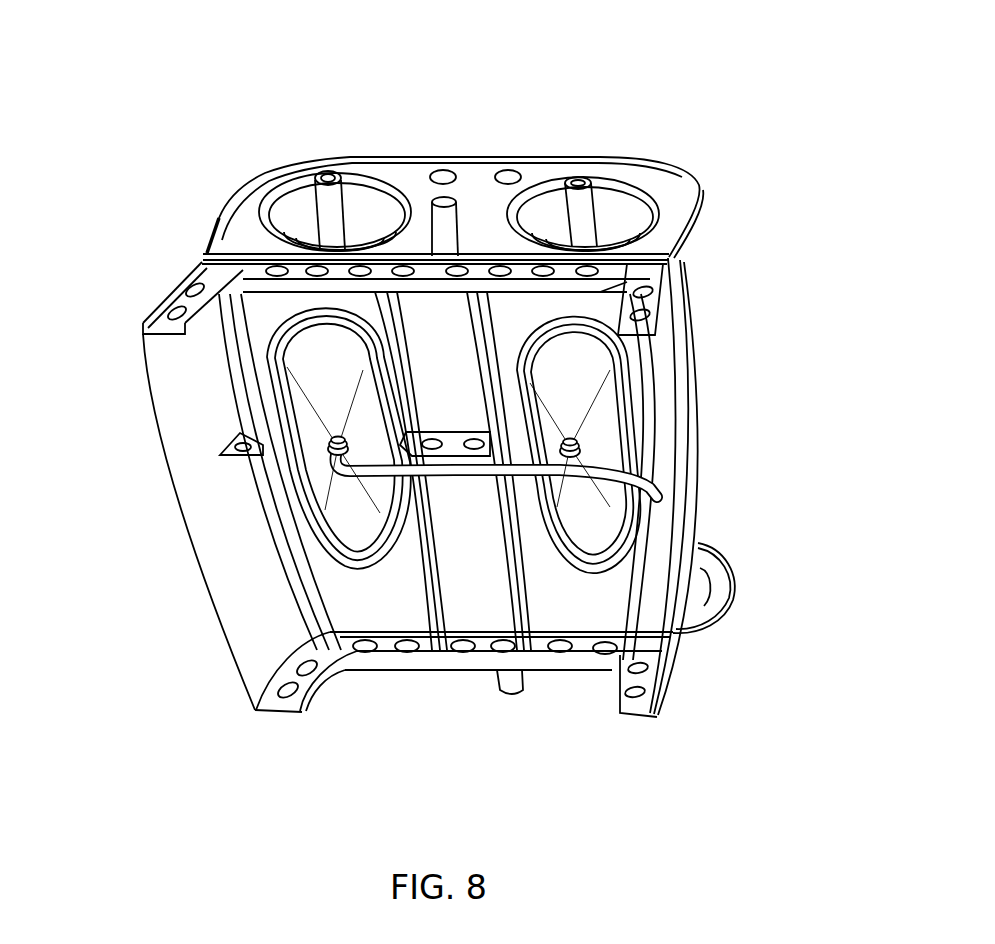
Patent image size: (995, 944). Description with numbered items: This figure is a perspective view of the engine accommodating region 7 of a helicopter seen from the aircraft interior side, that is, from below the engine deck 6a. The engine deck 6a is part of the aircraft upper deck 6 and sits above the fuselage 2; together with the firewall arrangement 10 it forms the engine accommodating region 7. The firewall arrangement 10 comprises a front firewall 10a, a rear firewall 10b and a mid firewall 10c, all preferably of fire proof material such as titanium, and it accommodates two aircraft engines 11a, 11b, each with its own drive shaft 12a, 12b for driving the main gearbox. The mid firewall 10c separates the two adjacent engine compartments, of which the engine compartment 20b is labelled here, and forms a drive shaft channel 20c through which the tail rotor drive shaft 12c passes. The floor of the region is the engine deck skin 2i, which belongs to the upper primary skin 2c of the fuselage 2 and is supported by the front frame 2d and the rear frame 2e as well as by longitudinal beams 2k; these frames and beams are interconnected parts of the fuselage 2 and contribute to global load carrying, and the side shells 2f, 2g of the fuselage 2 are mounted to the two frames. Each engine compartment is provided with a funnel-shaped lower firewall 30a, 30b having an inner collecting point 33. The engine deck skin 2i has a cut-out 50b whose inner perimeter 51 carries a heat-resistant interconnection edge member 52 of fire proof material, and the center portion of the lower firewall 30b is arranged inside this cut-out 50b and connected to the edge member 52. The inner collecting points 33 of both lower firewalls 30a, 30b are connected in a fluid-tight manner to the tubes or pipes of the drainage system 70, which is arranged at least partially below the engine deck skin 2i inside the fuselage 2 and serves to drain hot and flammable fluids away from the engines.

The fuselage 2 is at (243, 640).
The upper primary skin 2c is at (580, 603).
The front frame 2d is at (162, 322).
The rear frame 2e is at (631, 702).
The side shell 2f is at (170, 407).
The side shell 2g is at (668, 337).
The engine deck skin 2i is at (260, 307).
The longitudinal beams 2k is at (427, 650).
The aircraft upper deck 6 is at (690, 650).
The engine deck 6a is at (712, 247).
The engine accommodating region 7 is at (428, 85).
The firewall arrangement 10 is at (243, 205).
The front firewall 10a is at (237, 234).
The rear firewall 10b is at (717, 587).
The mid firewall 10c is at (463, 240).
The aircraft engine 11a is at (357, 205).
The aircraft engine 11b is at (626, 215).
The drive shaft 12a is at (318, 199).
The drive shaft 12b is at (619, 198).
The tail rotor drive shaft 12c is at (480, 240).
The engine compartment 20b is at (633, 210).
The drive shaft channel 20c is at (426, 236).
The lower firewall 30a is at (350, 523).
The lower firewall 30b is at (601, 545).
The inner collecting points 33 is at (325, 447).
The cut-out 50b is at (582, 327).
The inner perimeter 51 is at (540, 378).
The heat-resistant interconnection edge member 52 is at (614, 412).
The drainage system 70 is at (466, 485).